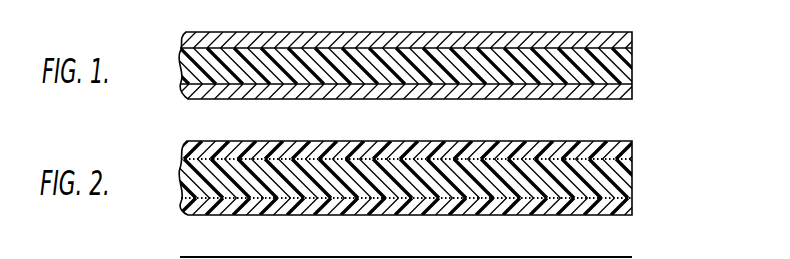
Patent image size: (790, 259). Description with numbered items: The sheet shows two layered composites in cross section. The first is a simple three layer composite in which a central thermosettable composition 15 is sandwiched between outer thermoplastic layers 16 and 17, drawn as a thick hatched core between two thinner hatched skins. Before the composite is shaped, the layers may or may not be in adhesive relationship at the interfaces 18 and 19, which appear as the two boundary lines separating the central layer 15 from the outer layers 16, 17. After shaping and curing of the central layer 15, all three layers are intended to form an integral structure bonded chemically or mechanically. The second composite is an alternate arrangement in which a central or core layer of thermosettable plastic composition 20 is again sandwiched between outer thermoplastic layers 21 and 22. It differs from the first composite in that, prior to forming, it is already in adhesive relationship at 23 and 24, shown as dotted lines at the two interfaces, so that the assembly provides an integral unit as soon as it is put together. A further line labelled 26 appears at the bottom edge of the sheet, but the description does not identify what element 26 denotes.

In FIG. 1, the central thermosettable composition 15 is at (627, 67).
In FIG. 1, the outer thermoplastic layer 16 is at (572, 36).
In FIG. 1, the outer thermoplastic layer 17 is at (616, 96).
In FIG. 1, the interface 18 is at (628, 48).
In FIG. 1, the interface 19 is at (425, 85).
In FIG. 2, the core layer of thermosettable plastic composition 20 is at (627, 180).
In FIG. 2, the outer thermoplastic layer 21 is at (628, 150).
In FIG. 2, the outer thermoplastic layer 22 is at (628, 207).
In FIG. 2, the adhesive relationship 23 is at (327, 160).
In FIG. 2, the adhesive relationship 24 is at (399, 198).
In FIG. 2, the base sheet 26 is at (243, 258).